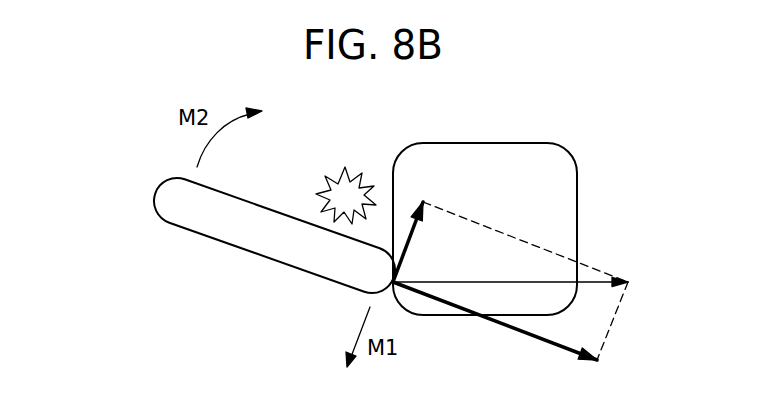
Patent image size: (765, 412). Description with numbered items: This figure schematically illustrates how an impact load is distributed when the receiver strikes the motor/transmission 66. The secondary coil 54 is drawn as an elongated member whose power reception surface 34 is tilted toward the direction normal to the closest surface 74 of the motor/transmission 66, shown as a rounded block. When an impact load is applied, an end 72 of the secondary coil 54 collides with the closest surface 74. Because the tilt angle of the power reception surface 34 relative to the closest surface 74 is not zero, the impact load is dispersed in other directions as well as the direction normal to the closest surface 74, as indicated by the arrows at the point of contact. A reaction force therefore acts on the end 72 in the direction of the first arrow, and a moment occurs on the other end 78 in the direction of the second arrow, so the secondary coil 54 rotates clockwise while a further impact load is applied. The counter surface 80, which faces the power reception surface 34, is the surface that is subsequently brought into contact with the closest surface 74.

The power reception surface 34 is at (238, 250).
The secondary coil 54 is at (191, 242).
The motor/transmission 66 is at (535, 143).
The end of the secondary coil 72 is at (374, 274).
The closest surface 74 is at (366, 186).
The other end of the secondary coil 78 is at (173, 200).
The counter surface 80 is at (262, 208).